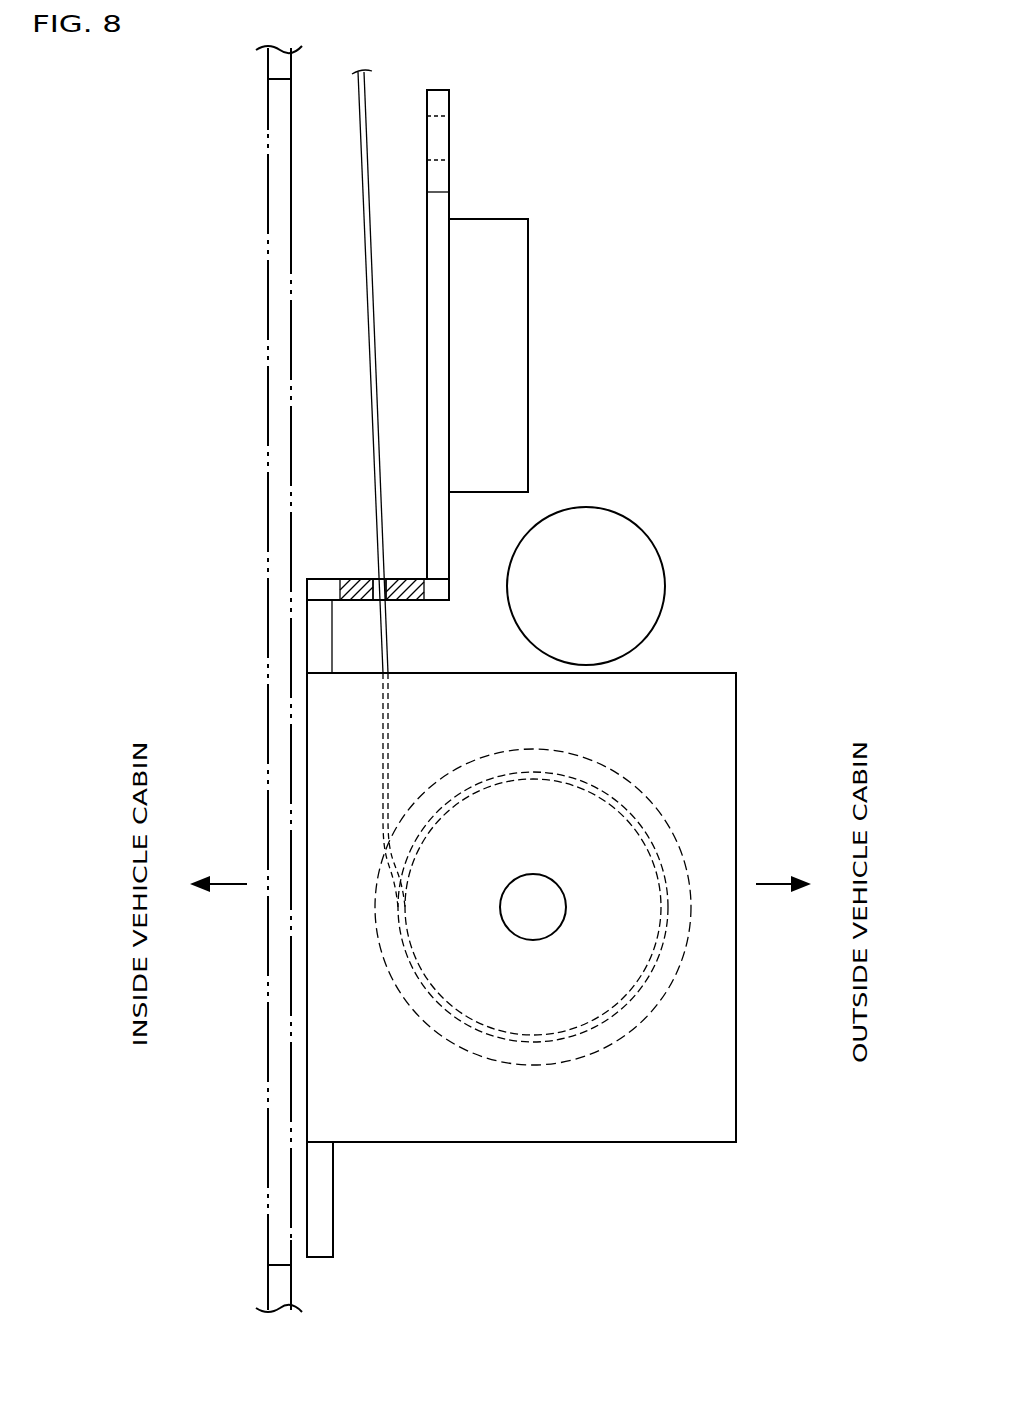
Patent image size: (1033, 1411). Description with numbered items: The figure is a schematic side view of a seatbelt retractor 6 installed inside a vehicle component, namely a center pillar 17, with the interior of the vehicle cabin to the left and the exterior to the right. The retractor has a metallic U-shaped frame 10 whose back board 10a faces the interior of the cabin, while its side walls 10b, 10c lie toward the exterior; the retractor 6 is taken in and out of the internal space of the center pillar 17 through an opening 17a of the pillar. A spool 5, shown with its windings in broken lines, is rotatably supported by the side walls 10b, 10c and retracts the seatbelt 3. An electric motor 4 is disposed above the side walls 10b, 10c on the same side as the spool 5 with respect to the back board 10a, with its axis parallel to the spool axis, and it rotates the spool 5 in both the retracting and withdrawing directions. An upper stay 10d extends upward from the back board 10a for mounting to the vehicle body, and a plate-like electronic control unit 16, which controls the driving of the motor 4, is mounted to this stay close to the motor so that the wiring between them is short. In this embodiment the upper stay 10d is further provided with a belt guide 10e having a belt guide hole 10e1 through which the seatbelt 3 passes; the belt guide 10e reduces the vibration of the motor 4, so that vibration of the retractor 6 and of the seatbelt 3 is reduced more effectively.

The seatbelt 3 is at (368, 352).
The electric motor 4 is at (633, 568).
The spool 5 is at (531, 1020).
The seatbelt retractor 6 is at (675, 292).
The frame 10 is at (796, 693).
The back board 10a is at (322, 1198).
The side wall 10b is at (655, 1122).
The side wall 10c is at (689, 963).
The upper stay 10d is at (440, 205).
The belt guide 10e is at (352, 579).
The belt guide hole 10e1 is at (388, 620).
The electronic control unit 16 is at (522, 343).
The center pillar 17 is at (268, 1097).
The opening 17a is at (282, 80).